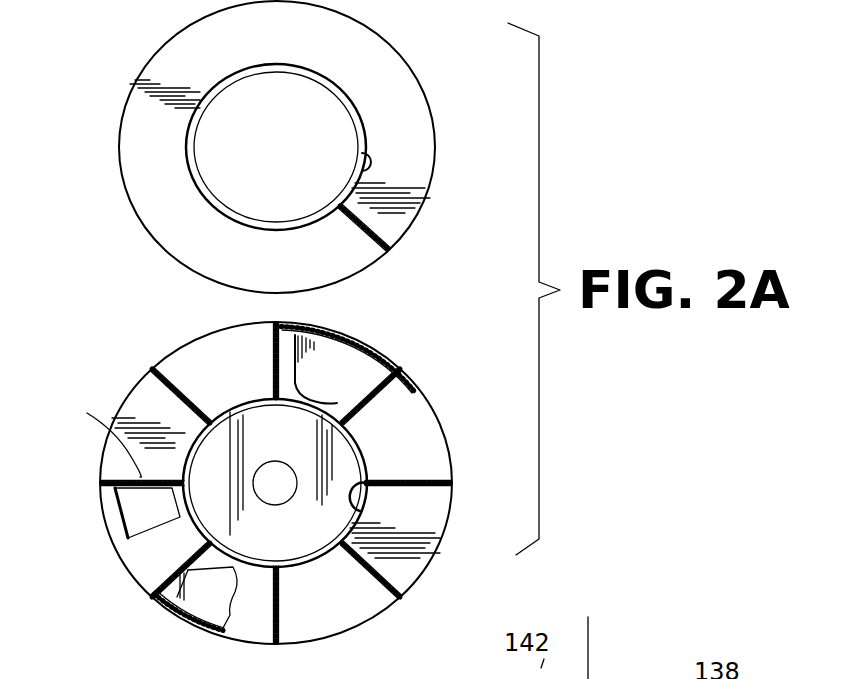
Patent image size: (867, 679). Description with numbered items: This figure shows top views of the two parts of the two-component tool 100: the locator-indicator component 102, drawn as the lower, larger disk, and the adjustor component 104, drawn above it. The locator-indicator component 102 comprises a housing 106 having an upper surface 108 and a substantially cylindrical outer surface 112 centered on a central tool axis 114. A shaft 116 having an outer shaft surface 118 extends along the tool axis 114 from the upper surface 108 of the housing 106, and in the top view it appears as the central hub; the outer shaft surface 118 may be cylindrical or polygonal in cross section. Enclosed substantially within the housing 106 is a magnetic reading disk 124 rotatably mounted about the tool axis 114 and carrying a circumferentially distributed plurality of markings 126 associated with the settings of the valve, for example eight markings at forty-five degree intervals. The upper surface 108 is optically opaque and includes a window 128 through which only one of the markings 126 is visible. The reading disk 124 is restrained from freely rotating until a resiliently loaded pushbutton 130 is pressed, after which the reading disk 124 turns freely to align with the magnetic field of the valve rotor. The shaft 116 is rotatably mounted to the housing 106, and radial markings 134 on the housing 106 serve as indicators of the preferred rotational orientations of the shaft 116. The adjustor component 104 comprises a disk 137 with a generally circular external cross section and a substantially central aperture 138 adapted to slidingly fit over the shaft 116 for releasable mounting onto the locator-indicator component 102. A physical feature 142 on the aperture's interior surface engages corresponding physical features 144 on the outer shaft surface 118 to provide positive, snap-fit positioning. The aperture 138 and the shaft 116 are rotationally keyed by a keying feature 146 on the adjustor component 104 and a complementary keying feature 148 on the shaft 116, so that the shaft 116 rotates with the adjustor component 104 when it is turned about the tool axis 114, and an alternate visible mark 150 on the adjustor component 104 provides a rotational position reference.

The two-component tool 100 is at (167, 307).
The locator-indicator component 102 is at (132, 578).
The adjustor component 104 is at (158, 50).
The housing 106 is at (353, 337).
The upper surface 108 is at (393, 557).
The outer surface 112 is at (113, 540).
The tool axis 114 is at (600, 648).
The shaft 116 is at (332, 455).
The outer shaft surface 118 is at (238, 403).
The magnetic reading disk 124 is at (342, 368).
The markings 126 is at (100, 477).
The window 128 is at (113, 502).
The pushbutton 130 is at (273, 493).
The radial markings 134 is at (133, 388).
The disk 137 is at (138, 212).
The central aperture 138 is at (357, 103).
The physical feature 142 is at (207, 105).
The physical features 144 is at (218, 443).
The keying feature 146 is at (364, 163).
The keying feature 148 is at (363, 492).
The visible mark 150 is at (382, 230).